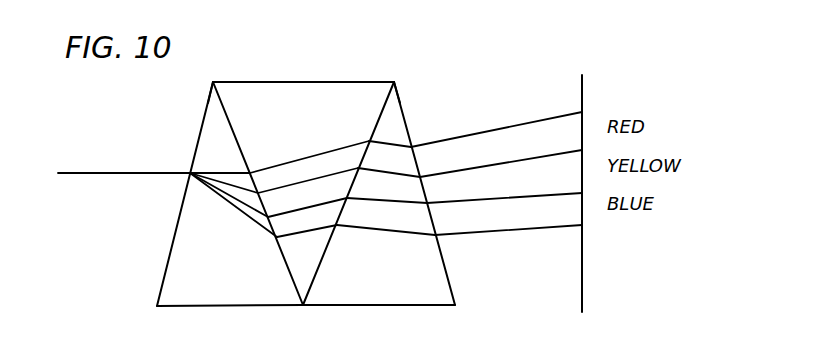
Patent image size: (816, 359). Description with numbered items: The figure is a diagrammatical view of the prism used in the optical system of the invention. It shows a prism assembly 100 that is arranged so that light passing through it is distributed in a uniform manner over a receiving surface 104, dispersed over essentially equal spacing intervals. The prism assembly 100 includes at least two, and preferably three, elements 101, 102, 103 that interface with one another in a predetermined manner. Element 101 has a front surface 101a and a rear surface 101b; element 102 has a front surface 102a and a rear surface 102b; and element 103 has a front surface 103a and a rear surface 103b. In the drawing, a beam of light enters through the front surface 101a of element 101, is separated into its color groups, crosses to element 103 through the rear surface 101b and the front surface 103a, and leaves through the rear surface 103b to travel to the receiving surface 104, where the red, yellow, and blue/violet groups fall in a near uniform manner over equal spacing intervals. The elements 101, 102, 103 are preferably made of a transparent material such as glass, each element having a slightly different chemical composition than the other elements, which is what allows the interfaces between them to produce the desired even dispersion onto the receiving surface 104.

The prism assembly 100 is at (273, 76).
The element 101 is at (213, 130).
The front surface 101a is at (160, 284).
The rear surface 101b is at (281, 250).
The element 102 is at (314, 91).
The front surface 102a is at (211, 100).
The rear surface 102b is at (388, 98).
The element 103 is at (395, 115).
The front surface 103a is at (325, 251).
The rear surface 103b is at (444, 264).
The receiving surface 104 is at (582, 93).